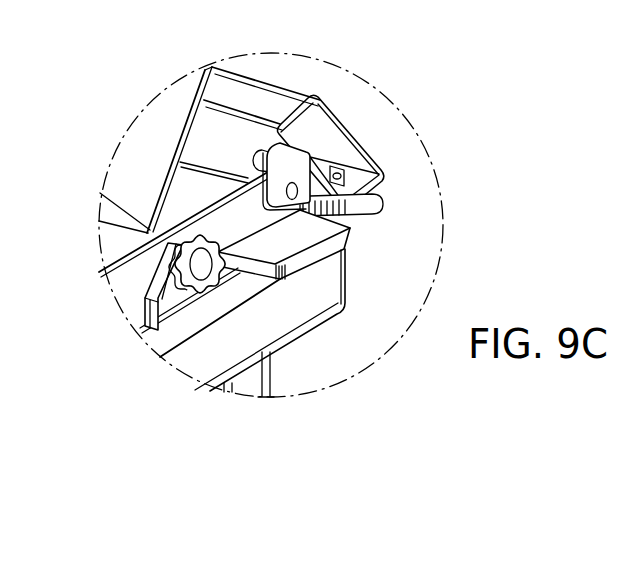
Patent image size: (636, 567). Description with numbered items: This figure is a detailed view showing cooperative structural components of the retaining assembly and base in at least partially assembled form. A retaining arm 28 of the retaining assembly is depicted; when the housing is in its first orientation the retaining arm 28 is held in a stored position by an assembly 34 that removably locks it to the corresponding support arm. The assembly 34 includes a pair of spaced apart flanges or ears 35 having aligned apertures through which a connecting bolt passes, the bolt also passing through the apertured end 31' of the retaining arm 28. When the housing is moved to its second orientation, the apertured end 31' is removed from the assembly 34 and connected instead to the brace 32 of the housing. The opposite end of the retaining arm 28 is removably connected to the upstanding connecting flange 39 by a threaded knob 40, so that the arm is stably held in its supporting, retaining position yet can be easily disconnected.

The retaining arm 28 is at (235, 218).
The apertured end 31' is at (191, 172).
The brace 32 is at (238, 90).
The assembly 34 is at (268, 134).
The flange 35 is at (312, 157).
The connecting flange 39 is at (145, 302).
The threaded knob 40 is at (192, 300).